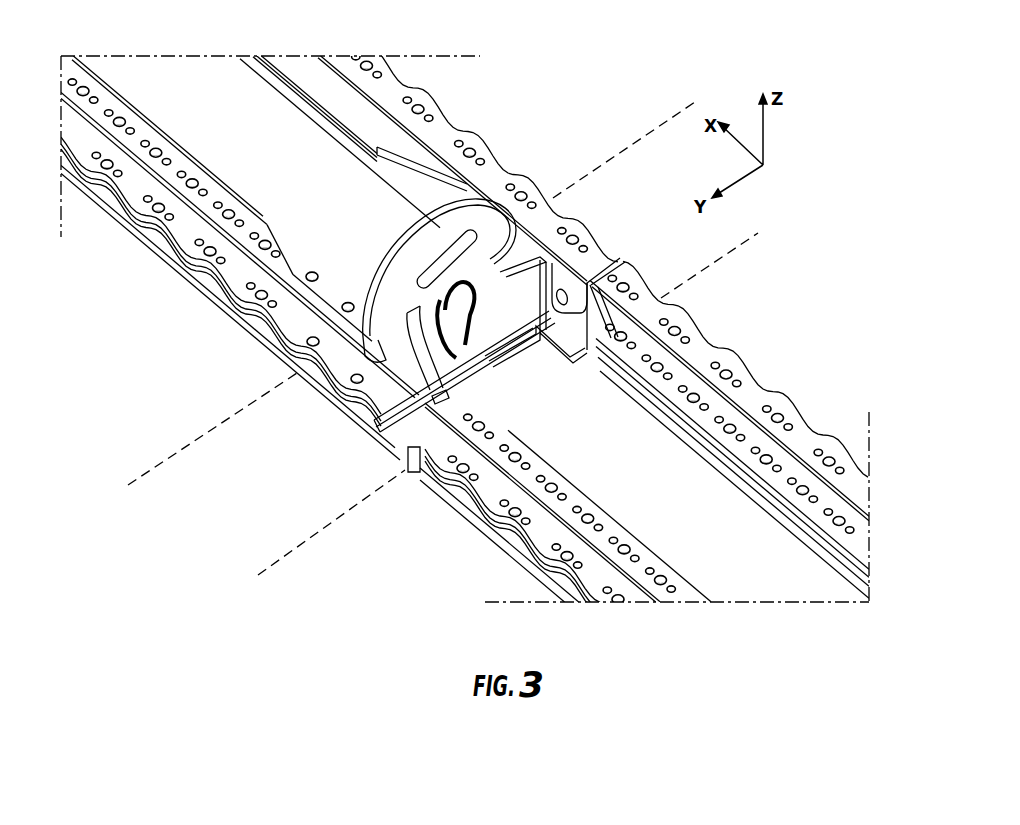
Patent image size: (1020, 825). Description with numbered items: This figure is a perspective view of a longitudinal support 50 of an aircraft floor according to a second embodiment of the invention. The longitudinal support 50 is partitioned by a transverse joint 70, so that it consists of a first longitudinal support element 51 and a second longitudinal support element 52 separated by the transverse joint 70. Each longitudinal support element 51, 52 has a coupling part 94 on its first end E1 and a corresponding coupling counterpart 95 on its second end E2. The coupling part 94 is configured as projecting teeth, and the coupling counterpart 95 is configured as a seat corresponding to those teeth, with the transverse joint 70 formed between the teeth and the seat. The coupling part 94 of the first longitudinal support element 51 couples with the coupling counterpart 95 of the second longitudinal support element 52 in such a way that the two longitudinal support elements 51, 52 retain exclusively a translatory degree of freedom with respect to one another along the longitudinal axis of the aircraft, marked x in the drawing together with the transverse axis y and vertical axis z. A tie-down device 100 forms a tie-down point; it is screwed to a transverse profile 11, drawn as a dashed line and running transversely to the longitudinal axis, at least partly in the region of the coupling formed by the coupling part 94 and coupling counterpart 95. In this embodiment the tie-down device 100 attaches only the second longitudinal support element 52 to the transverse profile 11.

The transverse profile 11 is at (667, 124).
The longitudinal support 50 is at (465, 332).
The first longitudinal support element 51 is at (644, 421).
The second longitudinal support element 52 is at (355, 255).
The transverse joint 70 is at (405, 469).
The coupling part 94 is at (470, 373).
The coupling counterpart 95 is at (440, 405).
The tie-down device 100 is at (482, 220).
The first end E1 is at (626, 262).
The second end E2 is at (620, 258).